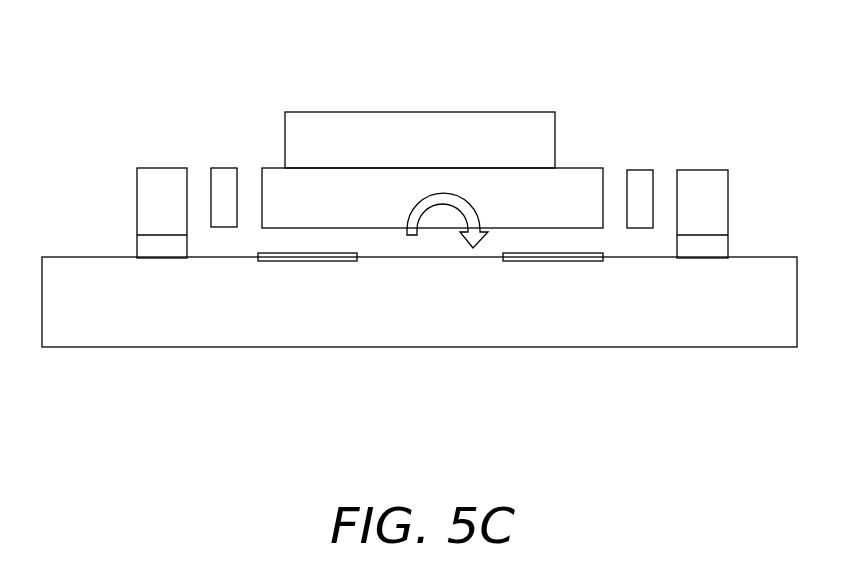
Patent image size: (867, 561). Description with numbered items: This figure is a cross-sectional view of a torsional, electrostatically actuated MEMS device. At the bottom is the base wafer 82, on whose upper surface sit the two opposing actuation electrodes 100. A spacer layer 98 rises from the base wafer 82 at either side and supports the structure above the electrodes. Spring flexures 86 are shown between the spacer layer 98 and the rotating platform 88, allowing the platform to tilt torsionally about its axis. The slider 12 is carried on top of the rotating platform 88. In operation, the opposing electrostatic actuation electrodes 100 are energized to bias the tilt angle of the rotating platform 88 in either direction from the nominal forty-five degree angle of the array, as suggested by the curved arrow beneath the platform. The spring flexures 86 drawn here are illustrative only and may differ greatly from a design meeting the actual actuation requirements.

The slider 12 is at (408, 112).
The rotating platform 88 is at (570, 168).
The spring flexures 86 is at (190, 152).
The spacer layer 98 is at (125, 237).
The base wafer 82 is at (797, 320).
The actuation electrodes 100 is at (305, 262).